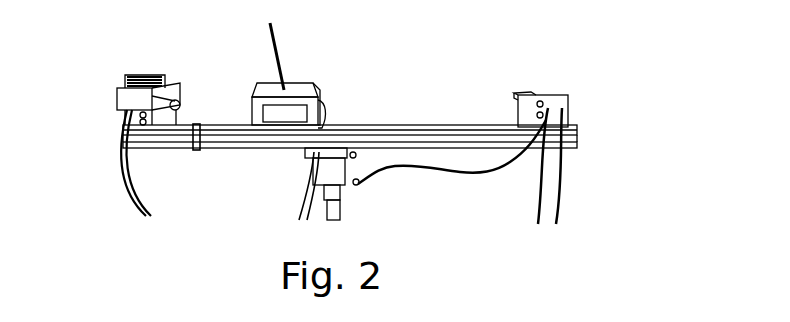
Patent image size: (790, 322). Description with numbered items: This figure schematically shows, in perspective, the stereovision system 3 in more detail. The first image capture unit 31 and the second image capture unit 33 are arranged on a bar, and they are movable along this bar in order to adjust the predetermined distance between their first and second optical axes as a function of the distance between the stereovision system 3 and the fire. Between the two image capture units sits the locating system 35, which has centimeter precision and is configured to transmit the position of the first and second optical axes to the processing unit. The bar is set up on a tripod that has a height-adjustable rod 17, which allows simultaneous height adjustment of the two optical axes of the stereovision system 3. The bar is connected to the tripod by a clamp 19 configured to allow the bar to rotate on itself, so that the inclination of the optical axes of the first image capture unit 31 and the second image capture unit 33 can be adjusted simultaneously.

The stereovision system 3 is at (632, 91).
The height-adjustable rod 17 is at (342, 205).
The clamp 19 is at (336, 143).
The first image capture unit 31 is at (566, 113).
The second image capture unit 33 is at (128, 99).
The locating system 35 is at (282, 121).